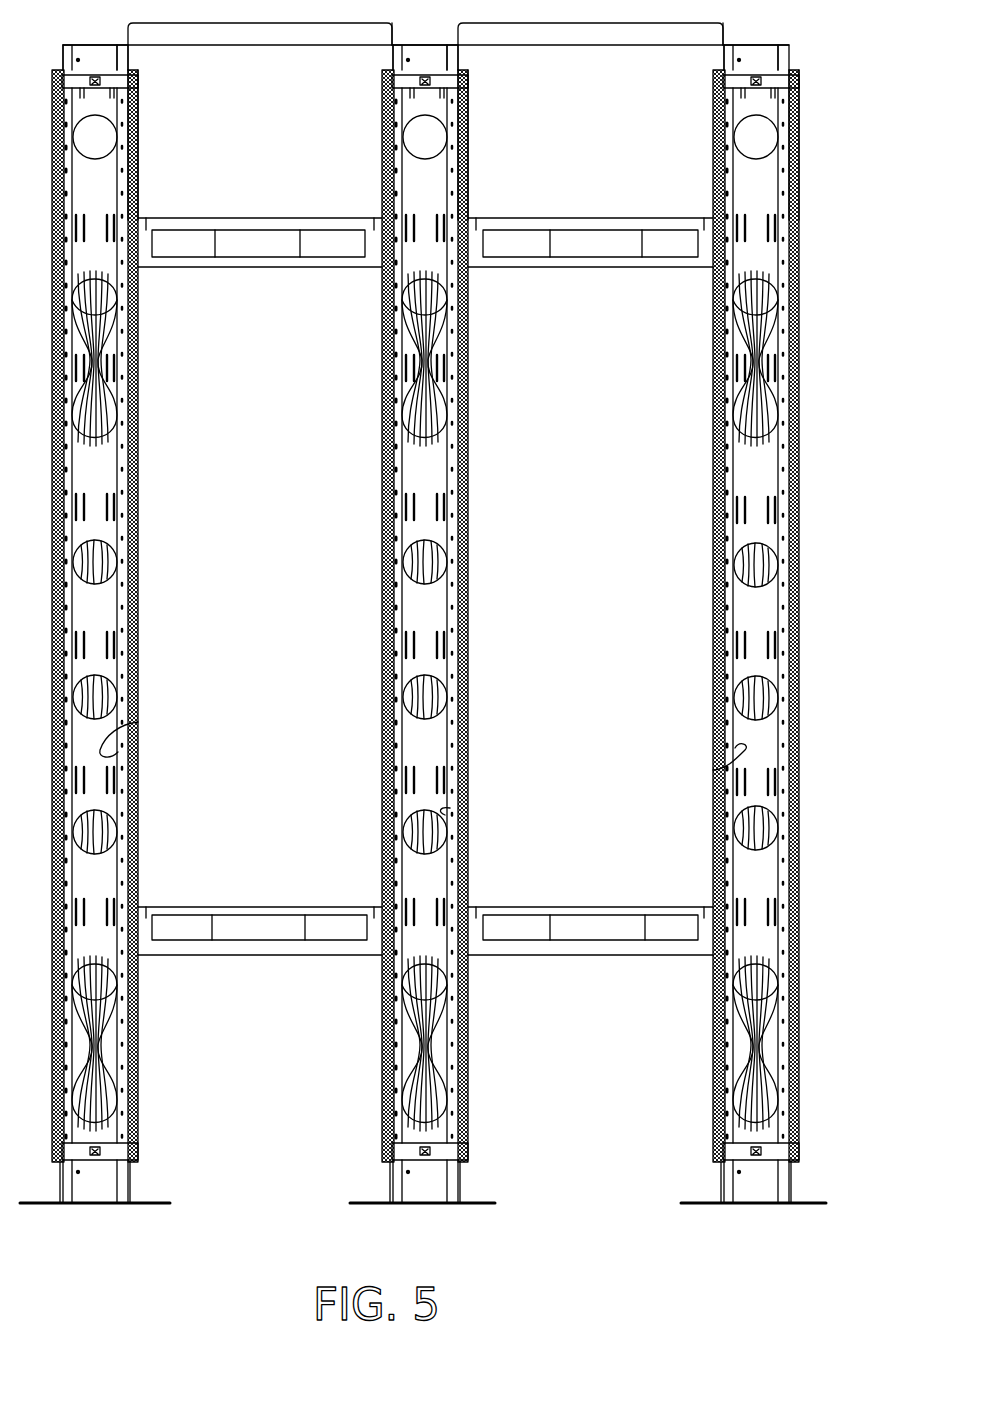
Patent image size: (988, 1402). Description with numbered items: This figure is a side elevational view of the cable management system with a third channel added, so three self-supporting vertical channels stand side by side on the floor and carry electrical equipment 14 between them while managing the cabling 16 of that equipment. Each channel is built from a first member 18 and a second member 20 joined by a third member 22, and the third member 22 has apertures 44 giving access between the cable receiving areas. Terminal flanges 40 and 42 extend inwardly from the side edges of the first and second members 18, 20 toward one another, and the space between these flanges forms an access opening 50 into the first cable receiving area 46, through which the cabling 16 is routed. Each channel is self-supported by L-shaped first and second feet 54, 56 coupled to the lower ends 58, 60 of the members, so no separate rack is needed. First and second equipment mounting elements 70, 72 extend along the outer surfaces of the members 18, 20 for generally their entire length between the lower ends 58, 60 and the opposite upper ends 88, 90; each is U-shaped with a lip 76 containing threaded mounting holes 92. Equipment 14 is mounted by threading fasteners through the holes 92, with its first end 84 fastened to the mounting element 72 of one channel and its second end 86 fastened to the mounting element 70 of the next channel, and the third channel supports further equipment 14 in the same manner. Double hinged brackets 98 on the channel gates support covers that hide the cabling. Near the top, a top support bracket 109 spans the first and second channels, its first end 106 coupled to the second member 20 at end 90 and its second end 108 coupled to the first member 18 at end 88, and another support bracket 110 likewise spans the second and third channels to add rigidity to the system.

The electrical equipment 14 is at (247, 272).
The cabling 16 is at (100, 328).
The first member 18 is at (383, 660).
The second member 20 is at (140, 617).
The third member 22 is at (92, 598).
The terminal flange 40 is at (118, 131).
The terminal flange 42 is at (135, 157).
The apertures 44 is at (140, 513).
The first cable receiving area 46 is at (88, 783).
The access opening 50 is at (138, 723).
The first base support foot 54 is at (58, 1210).
The second base support foot 56 is at (158, 1209).
The end 58 is at (382, 1168).
The end 60 is at (129, 1168).
The first equipment mounting element 70 is at (383, 522).
The second equipment mounting element 72 is at (140, 424).
The first lip 76 is at (398, 624).
The first end of equipment 84 is at (146, 222).
The second end of equipment 86 is at (375, 230).
The end 88 is at (63, 50).
The end 90 is at (132, 72).
The threaded mounting holes 92 is at (137, 493).
The double hinged bracket 98 is at (130, 118).
The first end of bracket 106 is at (128, 68).
The second end of bracket 108 is at (388, 65).
The top beam 109 is at (288, 52).
The support bracket 110 is at (565, 48).